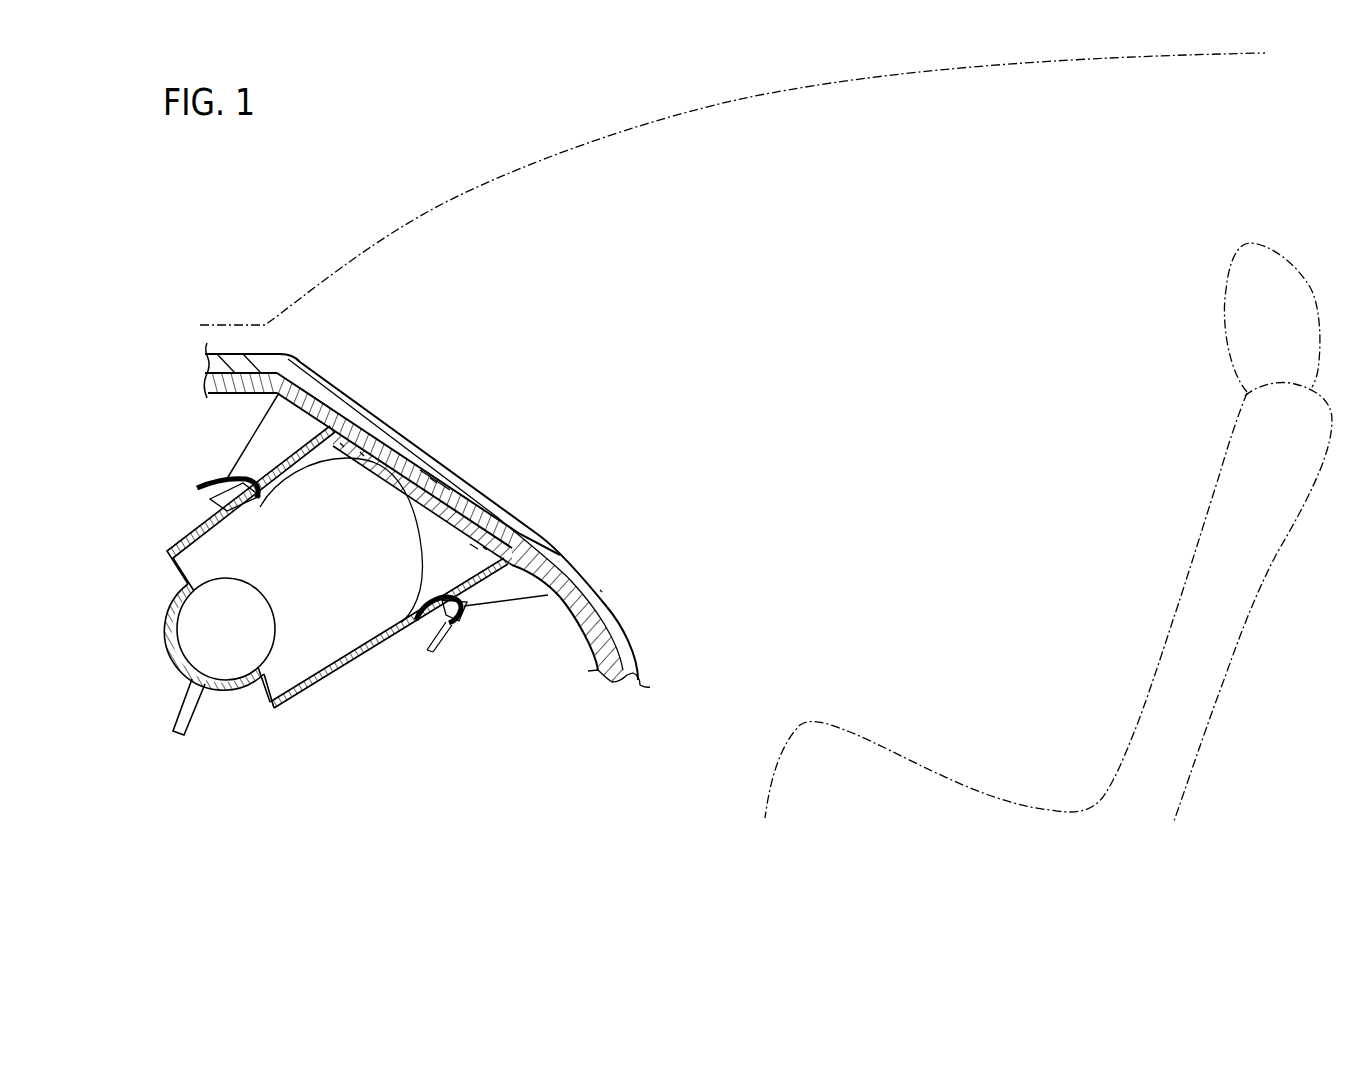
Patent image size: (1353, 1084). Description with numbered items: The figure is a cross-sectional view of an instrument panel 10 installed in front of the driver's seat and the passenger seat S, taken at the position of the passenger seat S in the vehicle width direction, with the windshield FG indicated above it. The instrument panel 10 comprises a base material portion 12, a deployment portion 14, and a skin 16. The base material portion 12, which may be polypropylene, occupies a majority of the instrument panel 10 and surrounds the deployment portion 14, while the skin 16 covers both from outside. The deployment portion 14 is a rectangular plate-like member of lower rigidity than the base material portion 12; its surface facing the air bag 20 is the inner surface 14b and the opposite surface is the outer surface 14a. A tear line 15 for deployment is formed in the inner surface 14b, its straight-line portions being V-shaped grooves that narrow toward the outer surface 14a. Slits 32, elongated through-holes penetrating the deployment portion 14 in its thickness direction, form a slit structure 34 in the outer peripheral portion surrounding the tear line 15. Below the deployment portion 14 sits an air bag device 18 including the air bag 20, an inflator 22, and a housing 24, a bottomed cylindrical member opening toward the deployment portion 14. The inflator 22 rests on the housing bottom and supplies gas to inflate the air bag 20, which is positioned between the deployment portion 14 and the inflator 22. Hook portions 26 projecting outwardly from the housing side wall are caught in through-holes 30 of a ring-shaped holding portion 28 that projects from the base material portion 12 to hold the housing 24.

The instrument panel 10 is at (662, 656).
The base material portion 12 is at (232, 383).
The deployment portion 14 is at (393, 470).
The outer surface 14a is at (393, 448).
The inner surface 14b is at (408, 440).
The tear line 15 is at (435, 455).
The skin 16 is at (583, 567).
The air bag device 18 is at (158, 551).
The air bag 20 is at (422, 532).
The inflator 22 is at (248, 626).
The housing 24 is at (304, 700).
The hook portion 26 is at (213, 482).
The holding portion 28 is at (258, 444).
The through-hole 30 is at (253, 499).
The slit 32 is at (360, 450).
The slit structure 34 is at (468, 542).
The windshield FG is at (427, 214).
The passenger seat S is at (1222, 463).